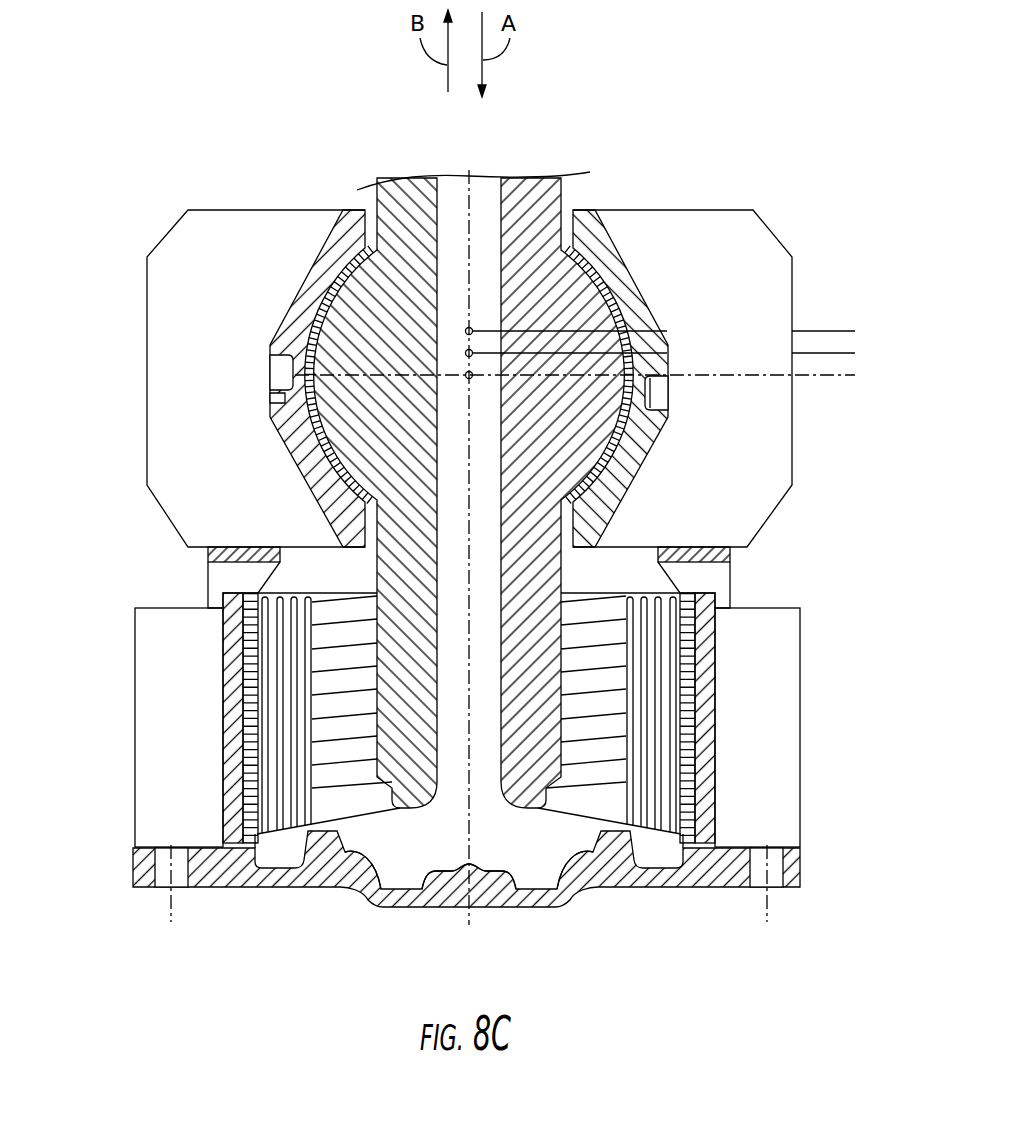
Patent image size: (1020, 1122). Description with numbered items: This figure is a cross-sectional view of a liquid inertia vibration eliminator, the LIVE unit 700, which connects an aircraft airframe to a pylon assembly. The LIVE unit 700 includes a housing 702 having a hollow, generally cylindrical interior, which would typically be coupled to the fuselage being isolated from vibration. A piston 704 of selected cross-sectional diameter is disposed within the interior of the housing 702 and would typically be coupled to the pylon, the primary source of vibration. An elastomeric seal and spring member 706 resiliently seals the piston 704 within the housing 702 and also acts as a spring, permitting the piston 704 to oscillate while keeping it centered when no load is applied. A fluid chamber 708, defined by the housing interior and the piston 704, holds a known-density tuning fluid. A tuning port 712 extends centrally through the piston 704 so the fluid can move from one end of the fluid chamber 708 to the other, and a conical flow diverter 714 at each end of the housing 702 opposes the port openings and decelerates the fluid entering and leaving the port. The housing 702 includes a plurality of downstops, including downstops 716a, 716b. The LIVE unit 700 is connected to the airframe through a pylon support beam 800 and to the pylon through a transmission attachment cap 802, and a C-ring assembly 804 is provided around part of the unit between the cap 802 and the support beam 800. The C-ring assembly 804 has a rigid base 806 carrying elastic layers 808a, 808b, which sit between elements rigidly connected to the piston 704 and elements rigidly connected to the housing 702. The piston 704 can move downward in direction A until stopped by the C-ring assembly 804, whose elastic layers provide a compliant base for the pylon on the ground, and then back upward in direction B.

The LIVE unit 700 is at (607, 150).
The housing 702 is at (270, 878).
The piston 704 is at (413, 176).
The elastomeric seal and spring member 706 is at (288, 595).
The fluid chamber 708 is at (667, 860).
The tuning port 712 is at (480, 196).
The conical flow diverter 714 is at (422, 892).
The downstop 716a is at (381, 889).
The downstop 716b is at (550, 878).
The pylon support beam 800 is at (152, 748).
The transmission attachment cap 802 is at (152, 348).
The C-ring assembly 804 is at (150, 575).
The rigid base 806 is at (208, 583).
The elastic layer 808a is at (208, 551).
The elastic layer 808b is at (730, 556).